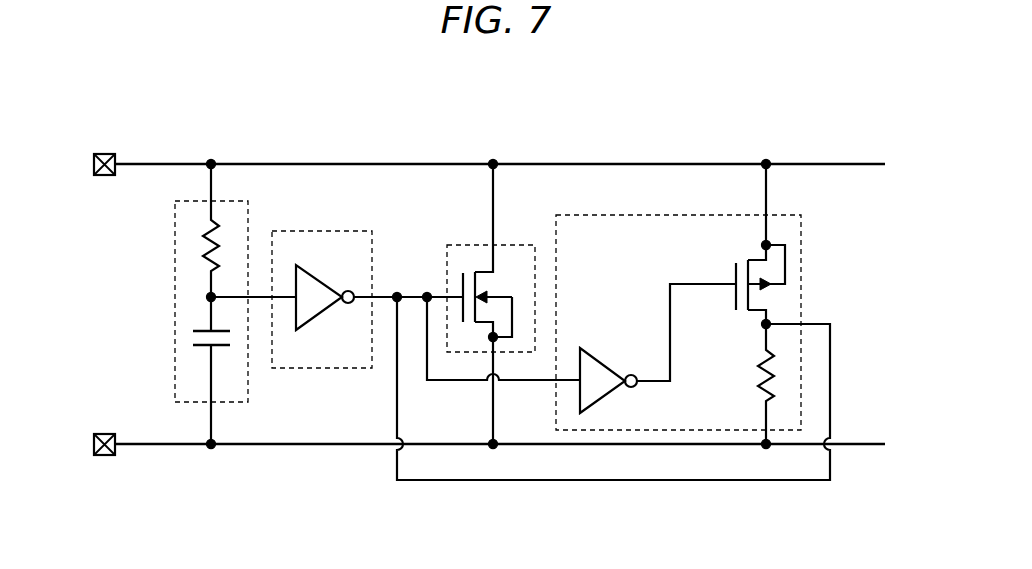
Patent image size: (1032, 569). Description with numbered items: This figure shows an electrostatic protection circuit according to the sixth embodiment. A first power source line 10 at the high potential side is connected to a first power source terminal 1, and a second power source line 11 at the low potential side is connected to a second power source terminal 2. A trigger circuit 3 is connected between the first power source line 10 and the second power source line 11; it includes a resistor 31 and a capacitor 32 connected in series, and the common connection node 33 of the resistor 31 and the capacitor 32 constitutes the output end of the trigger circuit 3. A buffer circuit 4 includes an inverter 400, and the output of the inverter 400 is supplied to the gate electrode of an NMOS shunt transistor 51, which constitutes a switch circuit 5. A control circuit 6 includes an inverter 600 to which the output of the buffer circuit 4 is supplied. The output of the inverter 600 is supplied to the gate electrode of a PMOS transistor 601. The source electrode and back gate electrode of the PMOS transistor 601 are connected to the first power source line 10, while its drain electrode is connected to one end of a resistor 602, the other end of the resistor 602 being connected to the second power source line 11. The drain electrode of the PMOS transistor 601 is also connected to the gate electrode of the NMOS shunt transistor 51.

The first power source terminal 1 is at (105, 152).
The second power source terminal 2 is at (105, 432).
The trigger circuit 3 is at (208, 304).
The resistor 31 is at (205, 252).
The capacitor 32 is at (193, 338).
The common connection node 33 is at (211, 297).
The buffer circuit 4 is at (349, 235).
The inverter 400 is at (318, 268).
The switch circuit 5 is at (484, 275).
The NMOS shunt transistor 51 is at (468, 262).
The control circuit 6 is at (678, 322).
The inverter 600 is at (612, 393).
The PMOS transistor 601 is at (741, 250).
The resistor 602 is at (755, 392).
The first power source line 10 is at (272, 162).
The second power source line 11 is at (245, 455).